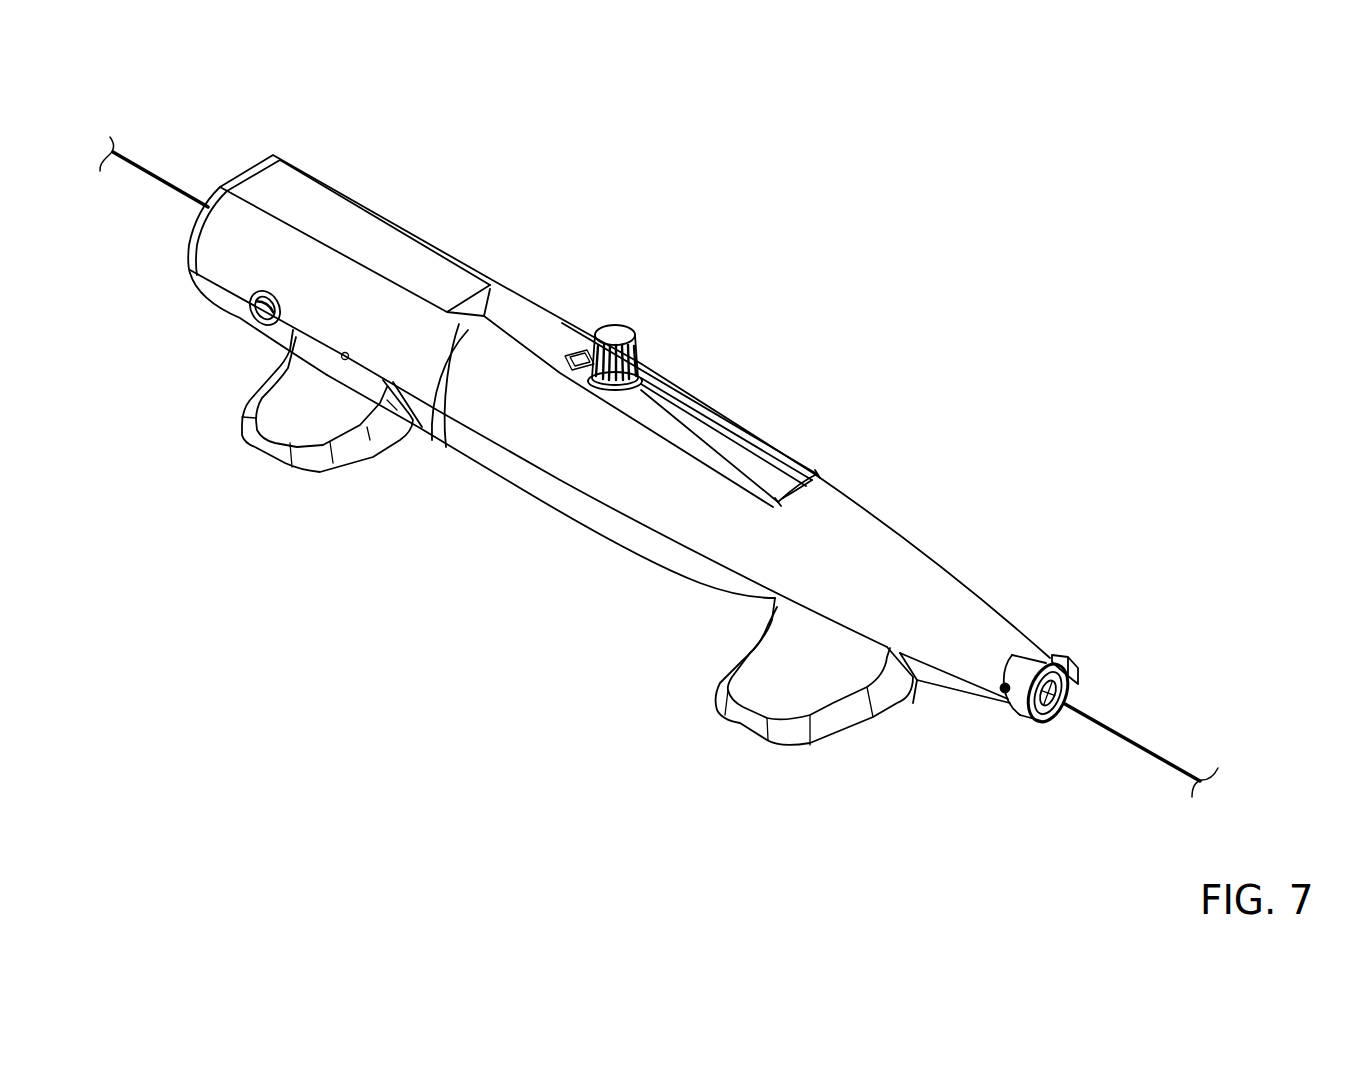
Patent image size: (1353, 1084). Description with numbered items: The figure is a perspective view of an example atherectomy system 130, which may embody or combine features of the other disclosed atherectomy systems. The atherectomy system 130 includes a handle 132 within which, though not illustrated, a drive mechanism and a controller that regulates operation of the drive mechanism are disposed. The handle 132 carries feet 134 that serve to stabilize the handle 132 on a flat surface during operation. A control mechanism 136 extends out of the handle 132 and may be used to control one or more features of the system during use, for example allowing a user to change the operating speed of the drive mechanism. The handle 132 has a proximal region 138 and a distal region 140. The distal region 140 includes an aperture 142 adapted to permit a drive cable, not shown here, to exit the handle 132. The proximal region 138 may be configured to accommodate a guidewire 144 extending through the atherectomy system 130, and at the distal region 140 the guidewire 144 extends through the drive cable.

The atherectomy system 130 is at (663, 441).
The handle 132 is at (843, 507).
The feet 134 is at (317, 457).
The control mechanism 136 is at (618, 330).
The proximal region 138 is at (306, 150).
The distal region 140 is at (1114, 695).
The aperture 142 is at (1058, 713).
The guidewire 144 is at (157, 173).